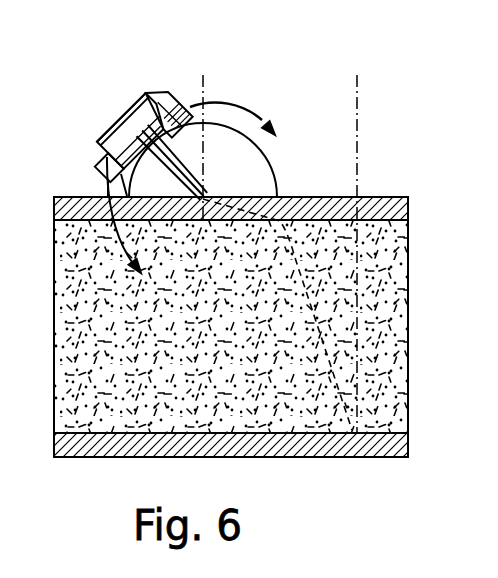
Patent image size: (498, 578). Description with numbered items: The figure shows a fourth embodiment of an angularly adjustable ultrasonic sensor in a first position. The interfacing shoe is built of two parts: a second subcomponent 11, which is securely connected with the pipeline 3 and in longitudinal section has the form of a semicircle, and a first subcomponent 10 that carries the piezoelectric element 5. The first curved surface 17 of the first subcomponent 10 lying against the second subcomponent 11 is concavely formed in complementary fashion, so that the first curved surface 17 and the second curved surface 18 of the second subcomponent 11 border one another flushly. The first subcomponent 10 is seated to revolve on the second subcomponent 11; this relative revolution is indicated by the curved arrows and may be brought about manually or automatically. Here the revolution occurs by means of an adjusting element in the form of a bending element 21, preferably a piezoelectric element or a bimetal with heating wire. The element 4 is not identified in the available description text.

The pipeline 3 is at (342, 458).
The container wall 4 is at (390, 316).
The piezoelectric element 5 is at (137, 102).
The first subcomponent 10 is at (105, 170).
The second subcomponent 11 is at (246, 182).
The first curved surface 17 is at (175, 100).
The second curved surface 18 is at (275, 160).
The bending element 21 is at (105, 130).